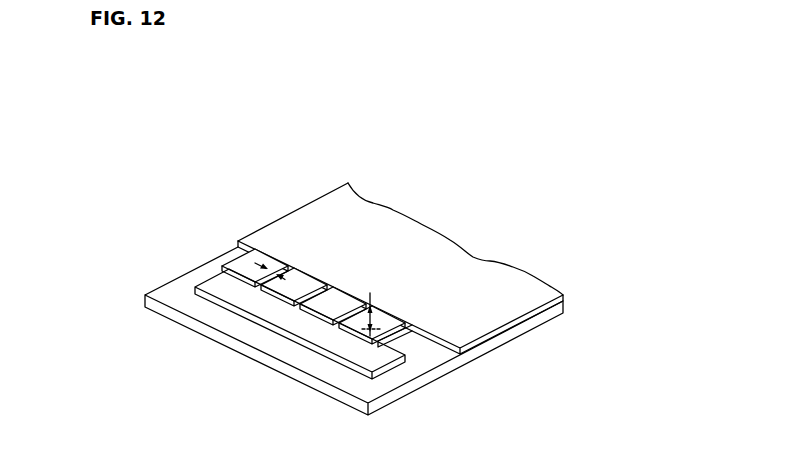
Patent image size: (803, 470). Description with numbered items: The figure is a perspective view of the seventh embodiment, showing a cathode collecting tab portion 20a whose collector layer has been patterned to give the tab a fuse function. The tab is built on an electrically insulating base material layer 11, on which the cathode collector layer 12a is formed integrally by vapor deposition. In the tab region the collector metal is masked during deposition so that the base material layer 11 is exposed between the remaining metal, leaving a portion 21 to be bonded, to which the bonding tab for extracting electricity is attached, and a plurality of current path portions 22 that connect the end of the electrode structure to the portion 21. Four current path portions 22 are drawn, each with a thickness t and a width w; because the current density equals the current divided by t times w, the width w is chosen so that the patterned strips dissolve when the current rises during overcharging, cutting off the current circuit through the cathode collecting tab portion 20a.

The base material layer 11 is at (525, 330).
The cathode collector layer 12a is at (323, 207).
The cathode collecting tab portion 20a is at (199, 264).
The portion to be bonded 21 is at (374, 363).
The current path portions 22 is at (392, 336).